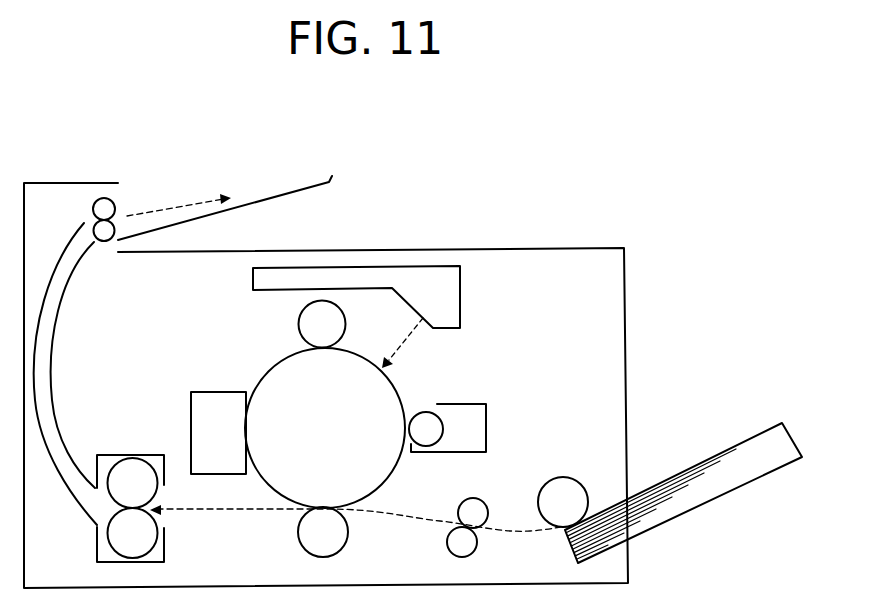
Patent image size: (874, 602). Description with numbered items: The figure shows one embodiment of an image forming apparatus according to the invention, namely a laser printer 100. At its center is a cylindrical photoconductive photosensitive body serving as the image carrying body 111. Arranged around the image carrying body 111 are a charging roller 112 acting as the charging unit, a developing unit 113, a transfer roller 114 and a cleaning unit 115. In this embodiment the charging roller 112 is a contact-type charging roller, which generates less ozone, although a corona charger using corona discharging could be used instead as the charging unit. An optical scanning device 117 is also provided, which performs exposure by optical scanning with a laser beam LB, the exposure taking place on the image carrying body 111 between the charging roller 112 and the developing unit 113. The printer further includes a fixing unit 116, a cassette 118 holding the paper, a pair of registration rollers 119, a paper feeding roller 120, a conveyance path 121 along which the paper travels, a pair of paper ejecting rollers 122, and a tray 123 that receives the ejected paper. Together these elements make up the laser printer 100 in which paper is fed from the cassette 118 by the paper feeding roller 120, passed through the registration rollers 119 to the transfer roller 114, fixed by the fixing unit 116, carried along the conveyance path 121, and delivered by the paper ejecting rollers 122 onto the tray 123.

The laser printer 100 is at (563, 215).
The image carrying body 111 is at (362, 467).
The charging roller 112 is at (298, 320).
The developing unit 113 is at (470, 405).
The transfer roller 114 is at (348, 542).
The cleaning unit 115 is at (211, 392).
The fixing unit 116 is at (165, 547).
The optical scanning device 117 is at (462, 296).
The cassette 118 is at (687, 500).
The pair of registration rollers 119 is at (492, 494).
The paper feeding roller 120 is at (565, 477).
The conveyance path 121 is at (52, 375).
The pair of paper ejecting rollers 122 is at (106, 247).
The tray 123 is at (280, 194).
The laser beam LB is at (410, 349).